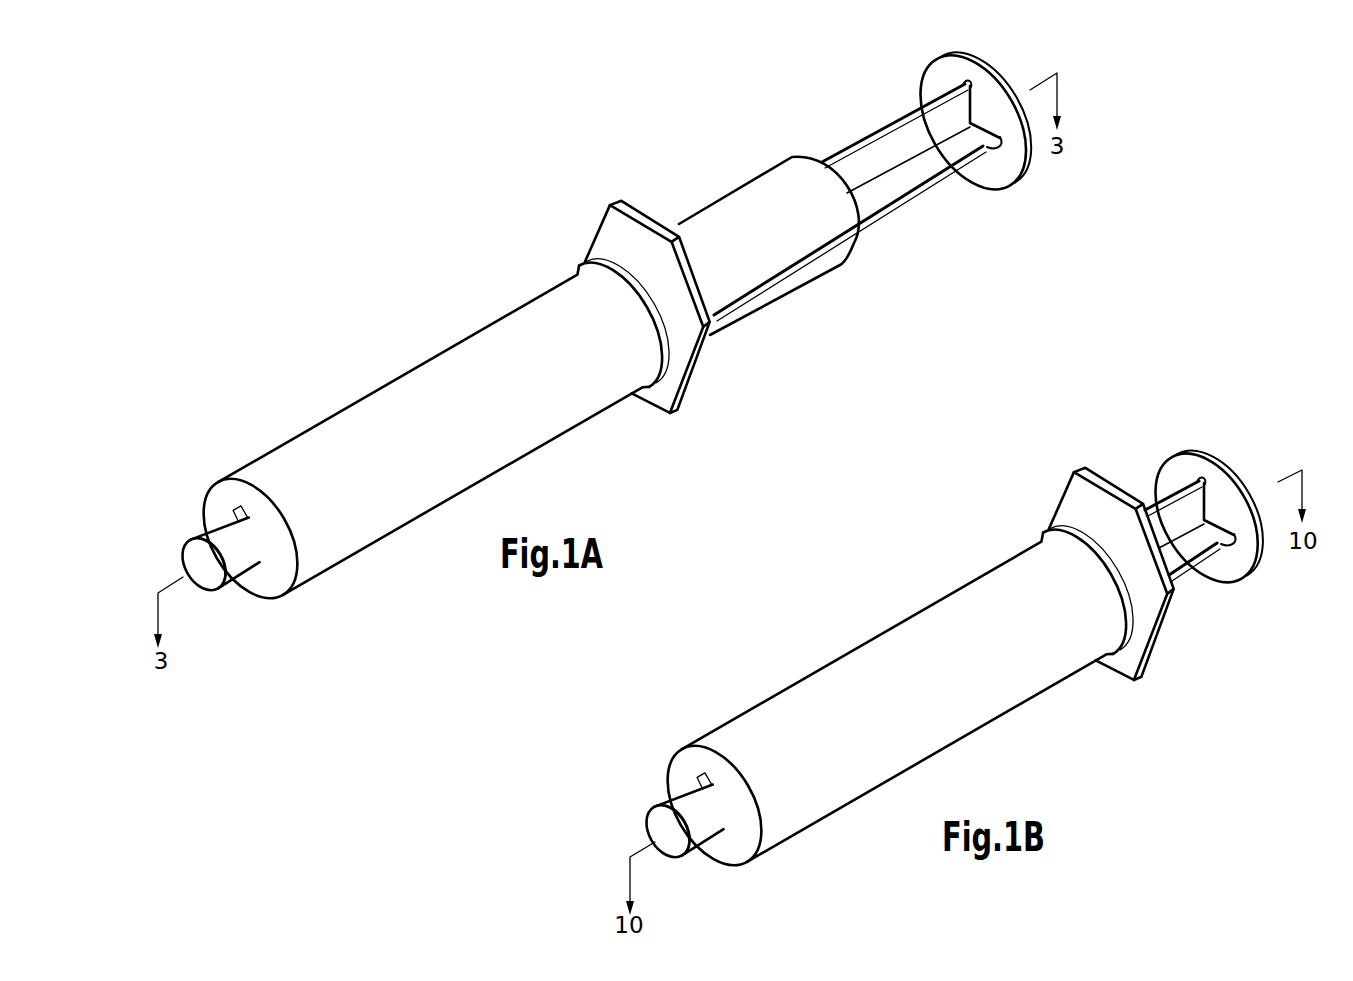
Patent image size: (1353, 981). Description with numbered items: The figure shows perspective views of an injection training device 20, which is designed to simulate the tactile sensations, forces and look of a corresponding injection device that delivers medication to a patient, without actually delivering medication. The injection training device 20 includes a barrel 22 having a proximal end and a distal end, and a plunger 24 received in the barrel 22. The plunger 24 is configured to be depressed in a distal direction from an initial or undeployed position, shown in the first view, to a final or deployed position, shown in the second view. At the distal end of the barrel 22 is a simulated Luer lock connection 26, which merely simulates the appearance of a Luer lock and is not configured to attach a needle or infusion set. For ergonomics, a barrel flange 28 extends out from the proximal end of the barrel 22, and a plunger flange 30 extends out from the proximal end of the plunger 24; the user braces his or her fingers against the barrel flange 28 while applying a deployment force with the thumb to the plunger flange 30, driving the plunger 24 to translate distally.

In FIG. 1A, the injection training device 20 is at (508, 199).
In FIG. 1B, the injection training device 20 is at (950, 484).
In FIG. 1A, the barrel 22 is at (418, 365).
In FIG. 1B, the barrel 22 is at (882, 632).
In FIG. 1A, the plunger 24 is at (737, 186).
In FIG. 1B, the plunger 24 is at (1188, 462).
In FIG. 1A, the simulated Luer lock connection 26 is at (210, 587).
In FIG. 1B, the simulated Luer lock connection 26 is at (679, 855).
In FIG. 1A, the barrel flange 28 is at (670, 421).
In FIG. 1B, the barrel flange 28 is at (1077, 466).
In FIG. 1A, the plunger flange 30 is at (975, 58).
In FIG. 1B, the plunger flange 30 is at (1230, 583).